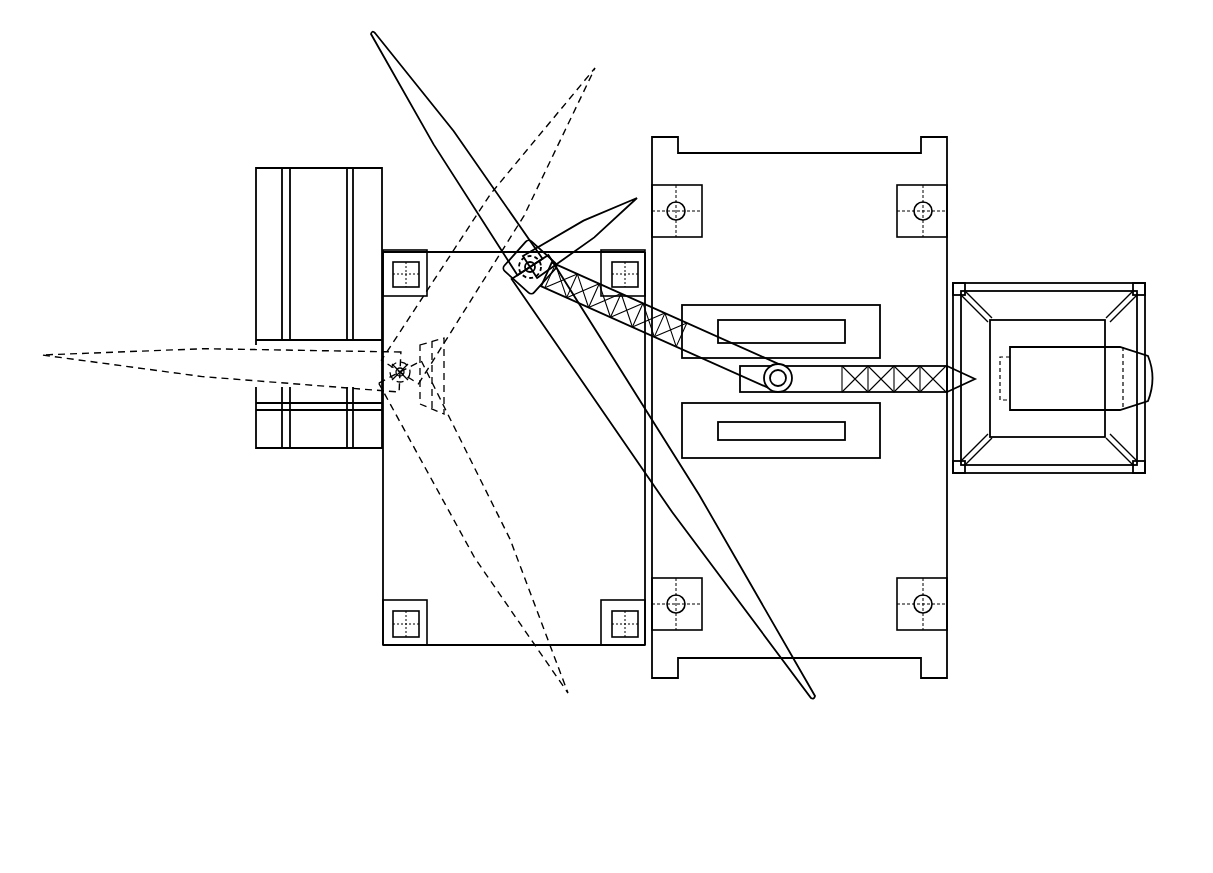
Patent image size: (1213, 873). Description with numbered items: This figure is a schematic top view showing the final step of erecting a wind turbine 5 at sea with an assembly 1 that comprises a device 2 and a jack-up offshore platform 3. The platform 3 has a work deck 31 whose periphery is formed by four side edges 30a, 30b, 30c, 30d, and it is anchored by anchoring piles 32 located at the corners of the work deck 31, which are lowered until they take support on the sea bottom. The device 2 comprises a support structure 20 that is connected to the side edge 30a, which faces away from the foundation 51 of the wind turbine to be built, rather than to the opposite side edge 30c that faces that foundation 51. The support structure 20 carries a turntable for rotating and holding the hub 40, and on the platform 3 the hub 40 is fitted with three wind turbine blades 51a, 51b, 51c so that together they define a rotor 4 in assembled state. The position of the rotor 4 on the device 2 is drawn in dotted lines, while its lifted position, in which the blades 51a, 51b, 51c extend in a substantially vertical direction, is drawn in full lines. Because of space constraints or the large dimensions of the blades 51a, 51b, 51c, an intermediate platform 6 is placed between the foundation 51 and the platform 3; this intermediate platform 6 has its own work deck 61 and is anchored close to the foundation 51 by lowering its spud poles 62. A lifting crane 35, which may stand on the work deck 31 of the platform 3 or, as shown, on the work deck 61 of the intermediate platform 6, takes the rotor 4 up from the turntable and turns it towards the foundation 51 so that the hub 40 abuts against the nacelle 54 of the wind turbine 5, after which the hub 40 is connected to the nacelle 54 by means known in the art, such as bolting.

The assembly 1 is at (133, 82).
The device 2 is at (250, 164).
The offshore platform 3 is at (372, 653).
The rotor 4 is at (462, 393).
The wind turbine 5 is at (1092, 484).
The intermediate platform 6 is at (965, 135).
The support structure 20 is at (257, 244).
The side edge 30a is at (381, 507).
The side edge 30b is at (445, 252).
The side edge 30c is at (644, 527).
The side edge 30d is at (495, 647).
The work deck 31 is at (549, 513).
The anchoring pile 32 is at (404, 250).
The lifting crane 35 is at (795, 464).
The hub 40 is at (447, 352).
The foundation 51 is at (1050, 328).
The wind turbine blade 51a is at (612, 418).
The wind turbine blade 51b is at (620, 216).
The wind turbine blade 51c is at (392, 62).
The nacelle 54 is at (1114, 378).
The work deck 61 is at (830, 586).
The spud pole 62 is at (686, 212).